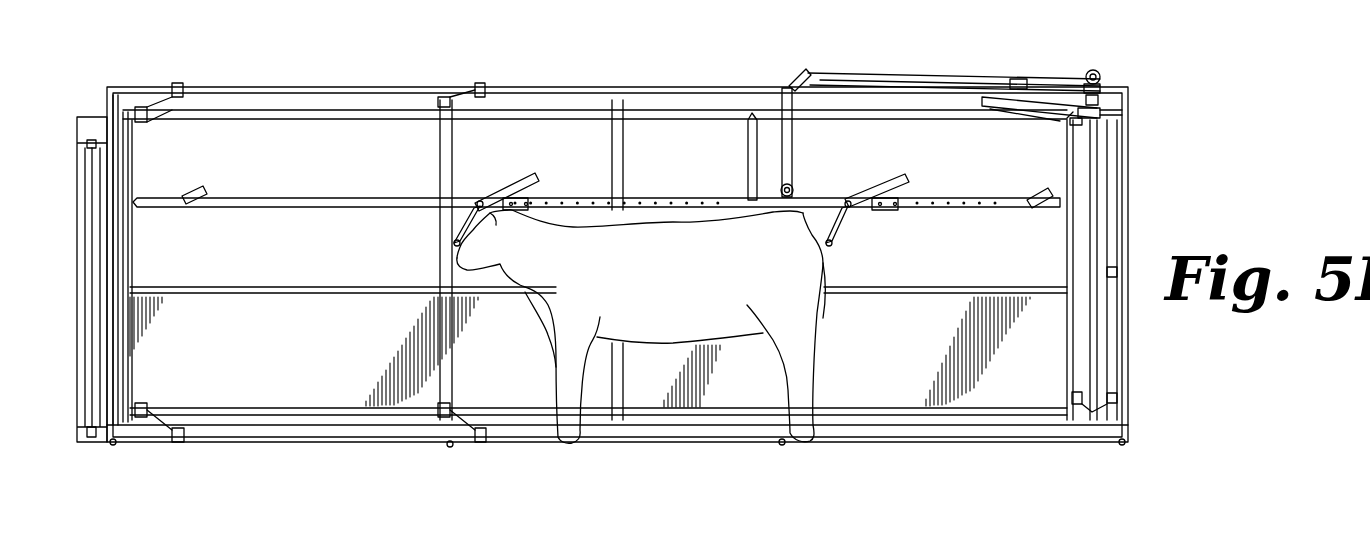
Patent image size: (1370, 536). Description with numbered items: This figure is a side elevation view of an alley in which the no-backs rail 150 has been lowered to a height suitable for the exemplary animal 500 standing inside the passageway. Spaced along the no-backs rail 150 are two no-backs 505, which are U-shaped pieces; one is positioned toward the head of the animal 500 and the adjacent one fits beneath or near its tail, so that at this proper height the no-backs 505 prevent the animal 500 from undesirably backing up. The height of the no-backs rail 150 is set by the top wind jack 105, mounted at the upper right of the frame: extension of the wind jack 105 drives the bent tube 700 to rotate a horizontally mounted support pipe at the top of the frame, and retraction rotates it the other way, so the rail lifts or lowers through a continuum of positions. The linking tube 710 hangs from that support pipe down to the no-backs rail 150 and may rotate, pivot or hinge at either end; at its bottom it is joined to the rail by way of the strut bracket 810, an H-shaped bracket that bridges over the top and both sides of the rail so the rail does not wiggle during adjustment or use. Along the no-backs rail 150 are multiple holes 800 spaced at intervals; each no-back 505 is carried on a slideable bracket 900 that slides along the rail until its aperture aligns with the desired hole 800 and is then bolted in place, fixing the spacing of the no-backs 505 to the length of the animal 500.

The wind jack 105 is at (1062, 68).
The no-backs rail 150 is at (355, 198).
The animal 500 is at (677, 289).
The no-backs 505 is at (497, 196).
The bent tube 700 is at (871, 73).
The linking tube 710 is at (779, 162).
The holes 800 is at (945, 210).
The strut bracket 810 is at (798, 189).
The slideable bracket 900 is at (896, 212).